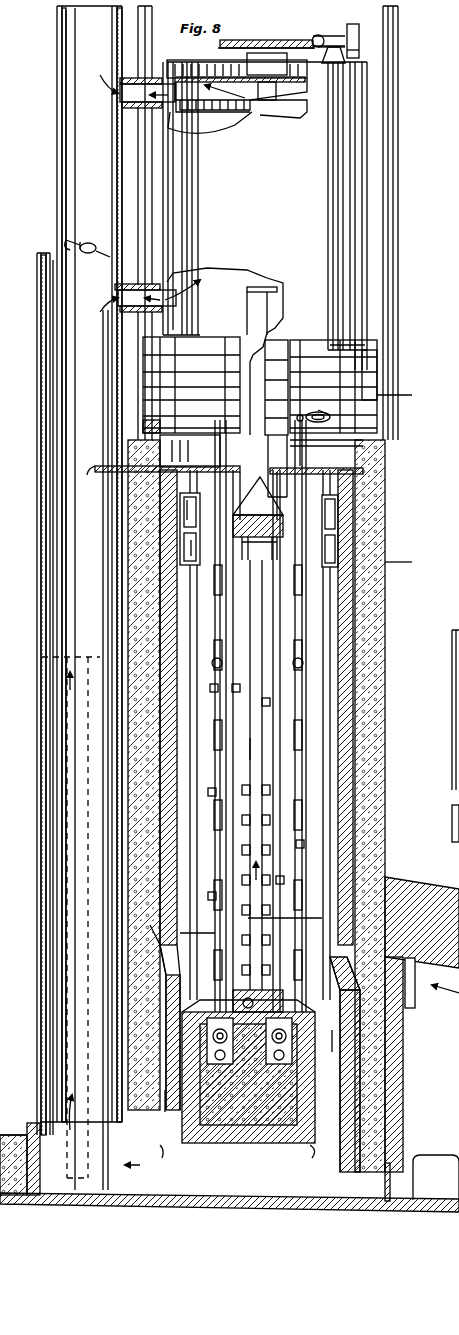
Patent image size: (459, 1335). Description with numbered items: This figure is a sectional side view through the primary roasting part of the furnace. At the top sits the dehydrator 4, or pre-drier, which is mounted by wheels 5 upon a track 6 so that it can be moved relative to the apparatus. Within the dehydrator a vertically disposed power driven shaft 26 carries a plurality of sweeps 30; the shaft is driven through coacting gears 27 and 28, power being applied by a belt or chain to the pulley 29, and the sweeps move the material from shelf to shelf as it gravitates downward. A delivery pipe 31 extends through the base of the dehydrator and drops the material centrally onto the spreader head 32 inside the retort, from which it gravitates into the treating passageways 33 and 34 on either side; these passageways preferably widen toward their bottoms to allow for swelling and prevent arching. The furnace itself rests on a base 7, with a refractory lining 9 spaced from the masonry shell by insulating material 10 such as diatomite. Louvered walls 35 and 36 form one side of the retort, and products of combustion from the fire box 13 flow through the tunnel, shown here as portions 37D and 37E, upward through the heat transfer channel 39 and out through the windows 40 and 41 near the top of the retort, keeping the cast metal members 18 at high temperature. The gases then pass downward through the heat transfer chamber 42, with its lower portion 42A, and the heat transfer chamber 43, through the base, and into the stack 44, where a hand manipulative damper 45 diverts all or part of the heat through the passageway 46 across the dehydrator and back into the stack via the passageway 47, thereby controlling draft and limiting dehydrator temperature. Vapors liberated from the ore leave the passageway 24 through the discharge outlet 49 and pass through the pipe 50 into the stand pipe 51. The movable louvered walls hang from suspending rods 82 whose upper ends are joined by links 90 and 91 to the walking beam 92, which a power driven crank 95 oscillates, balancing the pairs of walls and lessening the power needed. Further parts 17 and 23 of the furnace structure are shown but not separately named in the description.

The dehydrator 4 is at (345, 240).
The wheels 5 is at (332, 405).
The track 6 is at (365, 432).
The base 7 is at (168, 1193).
The refractory lining 9 is at (412, 404).
The insulating material 10 is at (412, 562).
The fire box 13 is at (322, 932).
The bottom bearing box 17 is at (213, 1028).
The cast metal members 18 is at (300, 845).
The tube 23 is at (212, 896).
The passageway 24 is at (300, 685).
The power driven shaft 26 is at (276, 112).
The coacting gear 27 is at (276, 44).
The coacting gear 28 is at (322, 36).
The pulley 29 is at (355, 28).
The sweeps 30 is at (300, 110).
The delivery pipe 31 is at (270, 360).
The spreader head 32 is at (278, 507).
The treating passageway 33 is at (266, 600).
The treating passageway 34 is at (222, 660).
The louvered wall 35 is at (160, 935).
The louvered wall 36 is at (280, 880).
The bottom fitting 37D is at (430, 1162).
The pin 37E is at (386, 1178).
The heat transfer channel 39 is at (268, 703).
The window 40 is at (332, 540).
The window 41 is at (84, 566).
The heat transfer chamber 42 is at (325, 780).
The bottom passage 42A is at (250, 1160).
The heat transfer chamber 43 is at (455, 720).
The stack 44 is at (80, 172).
The hand manipulative damper 45 is at (60, 250).
The passageway 46 is at (150, 300).
The passageway 47 is at (136, 95).
The discharge outlet 49 is at (236, 688).
The pipe 50 is at (212, 688).
The stand pipe 51 is at (212, 792).
The suspending rod 82 is at (130, 476).
The link 90 is at (165, 470).
The link 91 is at (300, 442).
The walking beam 92 is at (304, 412).
The power driven crank 95 is at (325, 420).